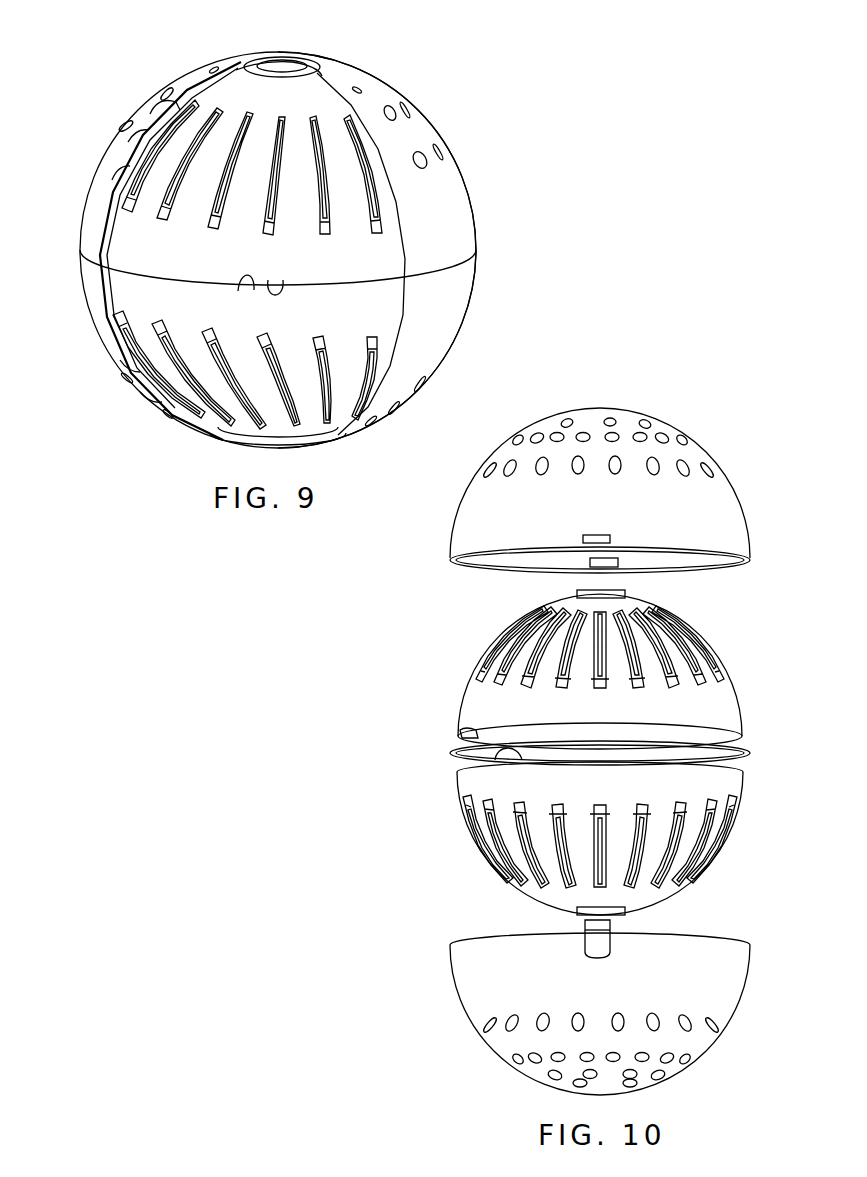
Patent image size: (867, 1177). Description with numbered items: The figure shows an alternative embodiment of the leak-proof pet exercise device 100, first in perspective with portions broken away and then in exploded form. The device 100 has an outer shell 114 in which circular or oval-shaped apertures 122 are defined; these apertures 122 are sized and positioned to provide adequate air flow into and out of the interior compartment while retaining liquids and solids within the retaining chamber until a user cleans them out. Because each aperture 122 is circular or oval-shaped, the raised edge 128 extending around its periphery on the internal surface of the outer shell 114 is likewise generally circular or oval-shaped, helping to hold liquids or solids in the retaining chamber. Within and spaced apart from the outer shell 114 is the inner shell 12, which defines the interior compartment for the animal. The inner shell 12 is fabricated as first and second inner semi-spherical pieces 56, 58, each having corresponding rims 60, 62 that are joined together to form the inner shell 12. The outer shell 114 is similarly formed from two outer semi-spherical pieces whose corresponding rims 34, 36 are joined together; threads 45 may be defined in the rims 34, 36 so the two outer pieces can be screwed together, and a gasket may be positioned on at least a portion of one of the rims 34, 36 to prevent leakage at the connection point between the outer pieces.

In FIG. 9, the inner shell 12 is at (152, 295).
In FIG. 10, the rim 34 is at (723, 572).
In FIG. 10, the rim 36 is at (712, 946).
In FIG. 10, the threads 45 is at (745, 755).
In FIG. 9, the first inner semi-spherical piece 56 is at (118, 230).
In FIG. 10, the first inner semi-spherical piece 56 is at (732, 717).
In FIG. 9, the second inner semi-spherical piece 58 is at (113, 288).
In FIG. 10, the second inner semi-spherical piece 58 is at (732, 789).
In FIG. 9, the rim 60 is at (283, 283).
In FIG. 10, the rim 60 is at (463, 733).
In FIG. 9, the rim 62 is at (244, 290).
In FIG. 10, the rim 62 is at (500, 757).
In FIG. 9, the device 100 is at (98, 93).
In FIG. 10, the device 100 is at (494, 446).
In FIG. 9, the outer shell 114 is at (470, 237).
In FIG. 9, the apertures 122 is at (388, 112).
In FIG. 10, the apertures 122 is at (512, 470).
In FIG. 9, the raised edge 128 is at (165, 104).